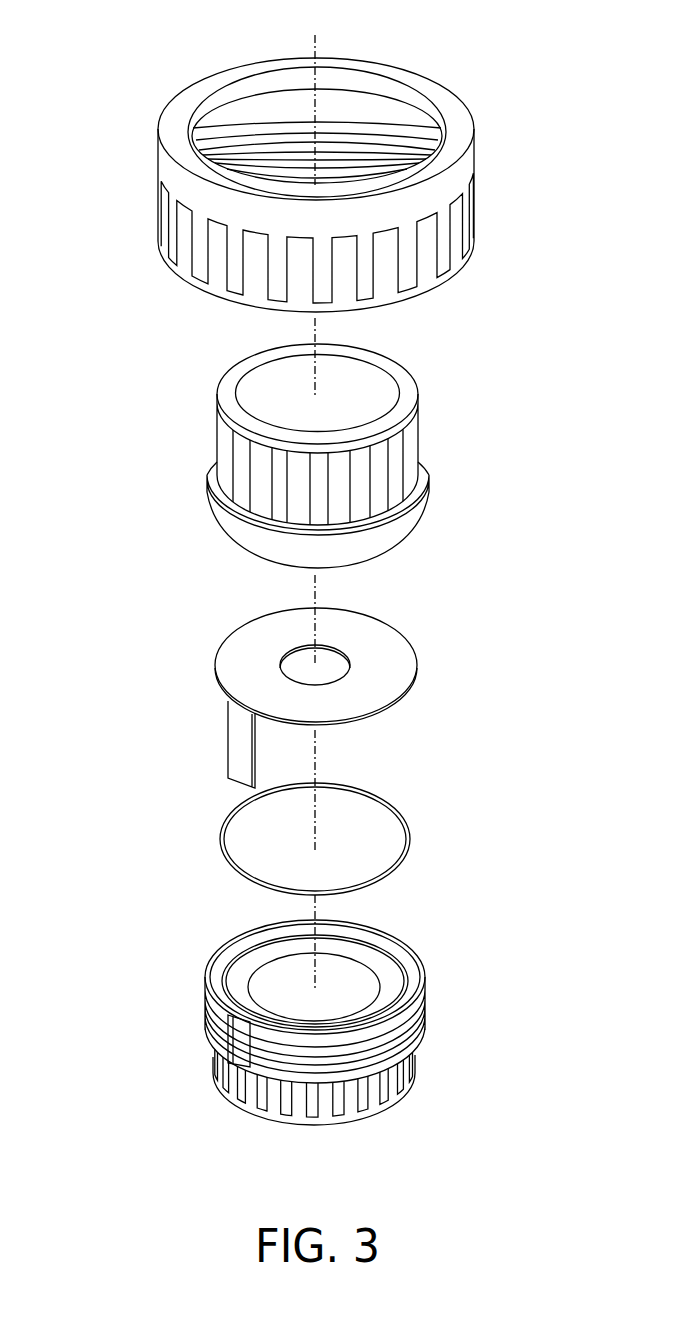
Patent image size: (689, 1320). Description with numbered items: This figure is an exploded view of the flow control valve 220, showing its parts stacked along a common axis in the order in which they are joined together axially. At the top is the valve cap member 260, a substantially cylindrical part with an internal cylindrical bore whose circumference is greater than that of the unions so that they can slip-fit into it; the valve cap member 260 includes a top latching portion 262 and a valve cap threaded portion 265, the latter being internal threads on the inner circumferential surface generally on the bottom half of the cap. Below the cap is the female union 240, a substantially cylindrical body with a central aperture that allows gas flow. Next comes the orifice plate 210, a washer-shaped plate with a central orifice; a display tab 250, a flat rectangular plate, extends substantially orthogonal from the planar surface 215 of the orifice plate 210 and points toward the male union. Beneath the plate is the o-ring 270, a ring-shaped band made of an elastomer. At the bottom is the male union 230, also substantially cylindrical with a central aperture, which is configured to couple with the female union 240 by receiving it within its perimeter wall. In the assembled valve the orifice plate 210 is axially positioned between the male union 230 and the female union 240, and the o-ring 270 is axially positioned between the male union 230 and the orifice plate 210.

The flow control valve 220 is at (97, 0).
The valve cap member 260 is at (430, 183).
The top latching portion 262 is at (380, 90).
The valve cap threaded portion 265 is at (251, 153).
The female union 240 is at (407, 467).
The orifice plate 210 is at (417, 668).
The planar surface 215 is at (370, 655).
The display tab 250 is at (235, 752).
The o-ring 270 is at (410, 830).
The male union 230 is at (430, 989).